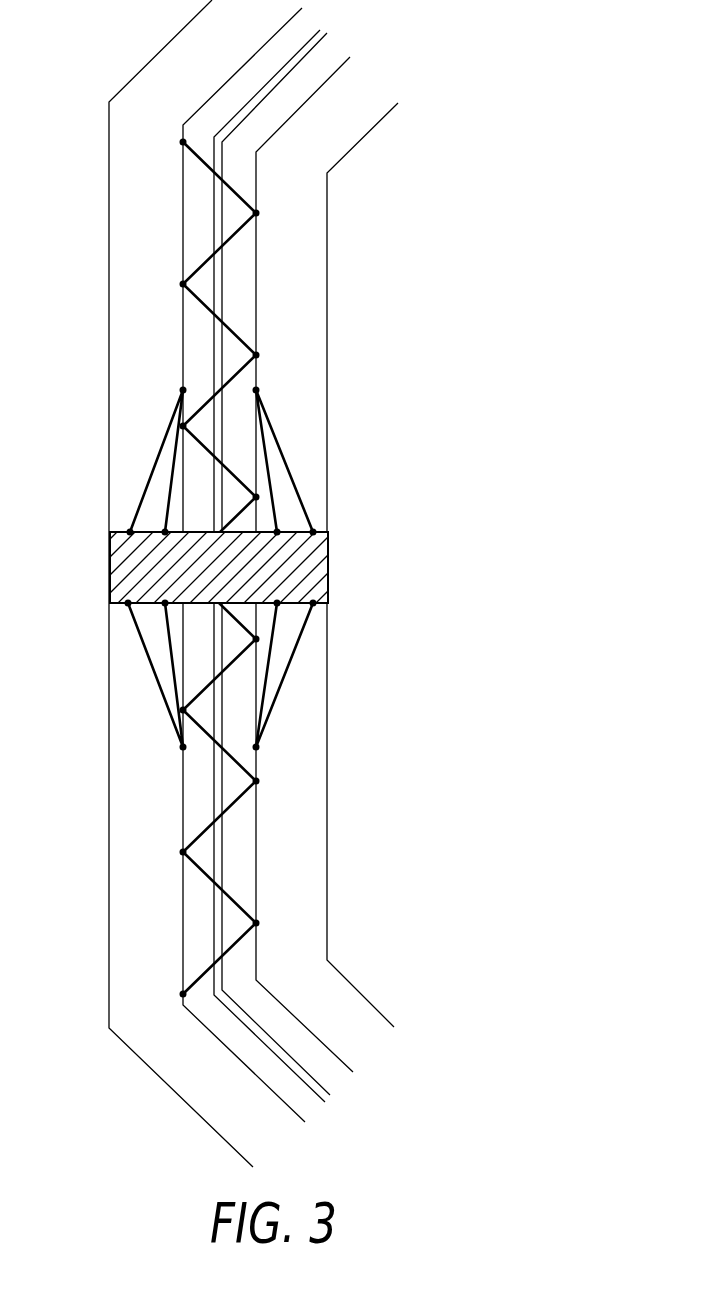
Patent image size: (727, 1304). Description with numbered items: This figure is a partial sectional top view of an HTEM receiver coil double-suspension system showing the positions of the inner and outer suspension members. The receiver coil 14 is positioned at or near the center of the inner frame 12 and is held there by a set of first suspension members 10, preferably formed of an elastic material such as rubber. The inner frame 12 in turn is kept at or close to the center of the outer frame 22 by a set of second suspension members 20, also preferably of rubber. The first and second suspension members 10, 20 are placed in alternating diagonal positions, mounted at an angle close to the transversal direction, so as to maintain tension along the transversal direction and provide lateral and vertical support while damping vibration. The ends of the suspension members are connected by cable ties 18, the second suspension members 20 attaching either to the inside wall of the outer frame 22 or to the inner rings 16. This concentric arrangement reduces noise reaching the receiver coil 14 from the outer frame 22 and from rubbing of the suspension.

The first suspension members 10 is at (223, 327).
The inner frame 12 is at (258, 373).
The receiver coil 14 is at (223, 278).
The inner rings 16 is at (145, 568).
The cable ties 18 is at (330, 604).
The second suspension members 20 is at (295, 668).
The outer frame 22 is at (330, 908).